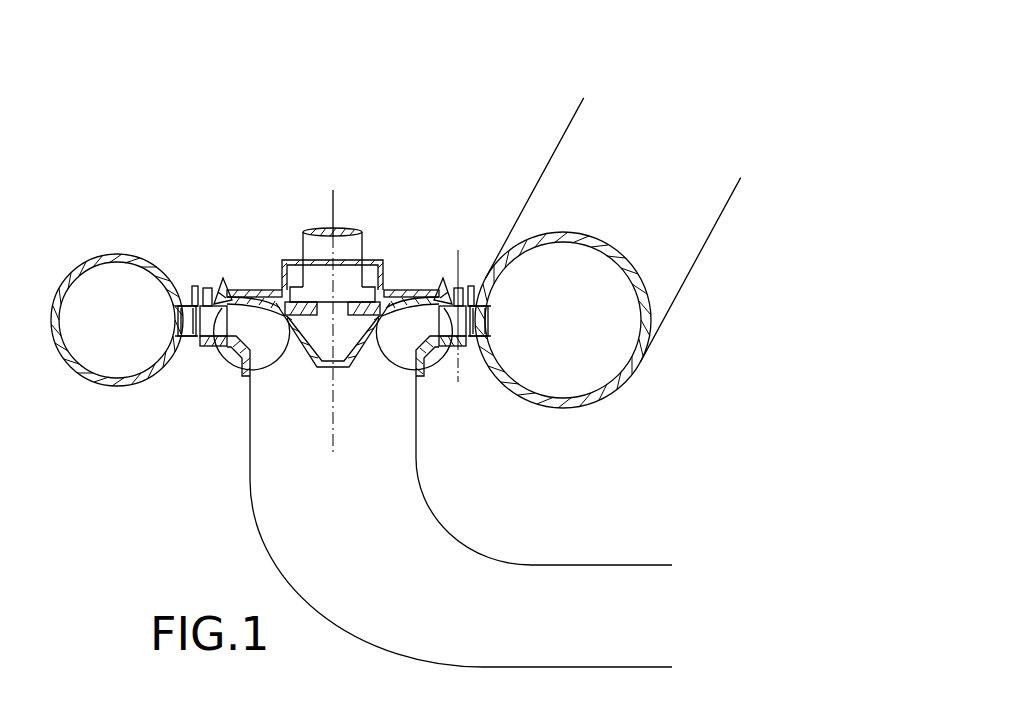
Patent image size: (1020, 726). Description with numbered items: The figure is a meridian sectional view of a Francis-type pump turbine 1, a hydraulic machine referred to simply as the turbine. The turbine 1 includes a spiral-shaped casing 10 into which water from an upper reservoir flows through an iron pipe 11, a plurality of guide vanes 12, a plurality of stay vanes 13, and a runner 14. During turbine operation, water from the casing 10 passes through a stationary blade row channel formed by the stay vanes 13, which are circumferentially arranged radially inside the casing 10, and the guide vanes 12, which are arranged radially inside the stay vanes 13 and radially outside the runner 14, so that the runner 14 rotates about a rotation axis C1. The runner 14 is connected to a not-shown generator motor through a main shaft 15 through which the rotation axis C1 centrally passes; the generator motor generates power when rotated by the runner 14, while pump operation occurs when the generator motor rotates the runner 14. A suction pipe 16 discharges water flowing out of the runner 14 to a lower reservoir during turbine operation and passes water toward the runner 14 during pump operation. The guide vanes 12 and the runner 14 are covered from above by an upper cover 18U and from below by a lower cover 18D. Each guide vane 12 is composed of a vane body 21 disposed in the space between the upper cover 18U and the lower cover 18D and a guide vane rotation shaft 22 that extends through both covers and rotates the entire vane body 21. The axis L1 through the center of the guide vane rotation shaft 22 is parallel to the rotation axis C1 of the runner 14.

The Francis-type pump turbine 1 is at (218, 137).
The casing 10 is at (555, 410).
The iron pipe 11 is at (564, 133).
The guide vane 12 is at (207, 322).
The stay vane 13 is at (177, 320).
The runner 14 is at (404, 301).
The main shaft 15 is at (302, 250).
The suction pipe 16 is at (250, 456).
The upper cover 18U is at (420, 292).
The lower cover 18D is at (431, 358).
The vane body 21 is at (214, 318).
The guide vane rotation shaft 22 is at (208, 288).
The rotation axis C1 is at (333, 197).
The rotation axis of guide vane rotation shaft L1 is at (458, 252).